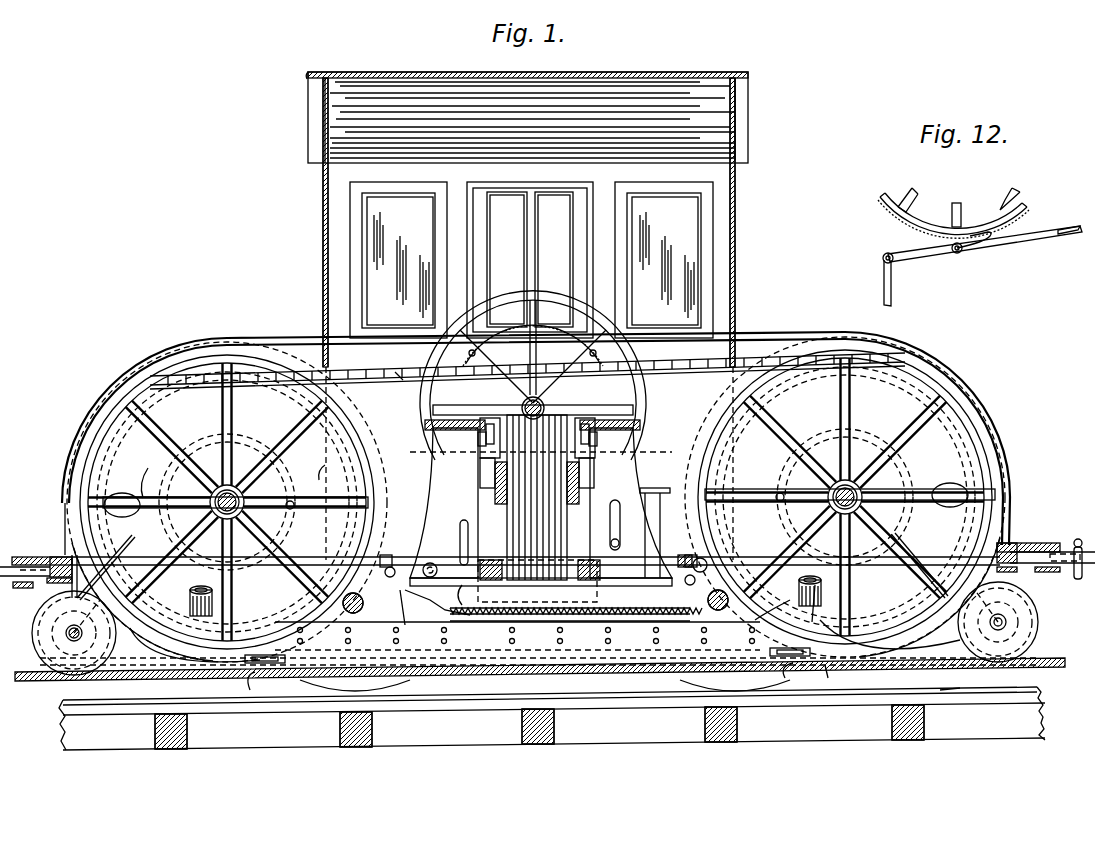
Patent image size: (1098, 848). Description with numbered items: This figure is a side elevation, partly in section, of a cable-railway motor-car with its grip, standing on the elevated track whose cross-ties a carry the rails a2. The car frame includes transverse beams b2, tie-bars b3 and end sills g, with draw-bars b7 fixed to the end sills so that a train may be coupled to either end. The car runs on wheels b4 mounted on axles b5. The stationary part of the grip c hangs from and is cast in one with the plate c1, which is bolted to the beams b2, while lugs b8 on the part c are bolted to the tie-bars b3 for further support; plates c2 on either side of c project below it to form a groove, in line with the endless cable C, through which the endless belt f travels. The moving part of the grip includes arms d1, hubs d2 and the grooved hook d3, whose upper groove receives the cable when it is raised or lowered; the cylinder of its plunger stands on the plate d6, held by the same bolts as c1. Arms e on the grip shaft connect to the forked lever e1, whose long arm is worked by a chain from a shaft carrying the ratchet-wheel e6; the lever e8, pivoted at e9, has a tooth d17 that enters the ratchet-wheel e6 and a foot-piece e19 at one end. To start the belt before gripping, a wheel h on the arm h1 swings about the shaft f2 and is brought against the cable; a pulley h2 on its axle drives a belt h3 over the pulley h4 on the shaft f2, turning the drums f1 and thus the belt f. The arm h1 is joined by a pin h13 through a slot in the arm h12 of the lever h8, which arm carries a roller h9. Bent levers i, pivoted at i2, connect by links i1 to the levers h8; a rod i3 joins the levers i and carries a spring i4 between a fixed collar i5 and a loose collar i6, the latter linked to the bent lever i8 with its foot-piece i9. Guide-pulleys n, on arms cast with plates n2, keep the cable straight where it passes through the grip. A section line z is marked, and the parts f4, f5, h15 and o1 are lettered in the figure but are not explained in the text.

In FIG. 1, the car wheels b4 is at (536, 512).
In FIG. 1, the rack bar f4 is at (298, 370).
In FIG. 1, the endless belt f is at (400, 372).
In FIG. 1, the post f5 is at (410, 376).
In FIG. 1, the drum f1 is at (290, 386).
In FIG. 1, the shaft f2 is at (240, 490).
In FIG. 1, the pulley h4 is at (206, 440).
In FIG. 1, the pin h13 is at (540, 487).
In FIG. 1, the arm h1 is at (158, 515).
In FIG. 1, the lever h8 is at (758, 487).
In FIG. 1, the roller h9 is at (122, 492).
In FIG. 1, the arm h12 is at (927, 486).
In FIG. 1, the pin h15 is at (305, 493).
In FIG. 1, the ratchet-wheel e6 is at (556, 297).
In FIG. 12, the ratchet-wheel e6 is at (953, 213).
In FIG. 1, the pawl-lever e8 is at (545, 405).
In FIG. 12, the pawl-lever e8 is at (988, 250).
In FIG. 1, the plate d6 is at (537, 508).
In FIG. 1, the arms e is at (537, 443).
In FIG. 1, the forked lever e1 is at (536, 504).
In FIG. 1, the arms d1 is at (541, 503).
In FIG. 1, the hook d3 is at (432, 428).
In FIG. 1, the hubs d2 is at (533, 440).
In FIG. 1, the transverse beams b2 is at (540, 580).
In FIG. 1, the stationary part of the grip c is at (540, 612).
In FIG. 1, the plate c1 is at (576, 602).
In FIG. 1, the fixed collar i5 is at (379, 633).
In FIG. 1, the rod i3 is at (536, 633).
In FIG. 1, the spring i4 is at (618, 633).
In FIG. 1, the loose collar i6 is at (713, 633).
In FIG. 1, the pivots i2 is at (436, 565).
In FIG. 1, the pivot o1 is at (441, 557).
In FIG. 12, the pivot o1 is at (895, 279).
In FIG. 1, the link i1 is at (690, 560).
In FIG. 1, the foot-piece i9 is at (665, 493).
In FIG. 1, the foot-piece e19 is at (650, 488).
In FIG. 12, the foot-piece e19 is at (1078, 228).
In FIG. 1, the bent levers i is at (597, 598).
In FIG. 1, the section line z is at (607, 605).
In FIG. 1, the bent lever i8 is at (552, 593).
In FIG. 1, the tie-bars b3 is at (538, 578).
In FIG. 1, the lugs b8 is at (687, 575).
In FIG. 1, the axles b5 is at (538, 605).
In FIG. 1, the plate n2 is at (258, 580).
In FIG. 1, the guide-pulleys n is at (545, 641).
In FIG. 1, the end sills g is at (40, 557).
In FIG. 1, the draw-bars b7 is at (1066, 572).
In FIG. 1, the belt h3 is at (72, 556).
In FIG. 1, the endless cable C is at (30, 672).
In FIG. 1, the wheel h is at (34, 618).
In FIG. 1, the pulley h2 is at (66, 633).
In FIG. 1, the cross-ties a is at (552, 718).
In FIG. 1, the rails a2 is at (945, 690).
In FIG. 1, the plates c2 is at (305, 685).
In FIG. 12, the pivot e9 is at (955, 254).
In FIG. 12, the tooth d17 is at (1005, 238).